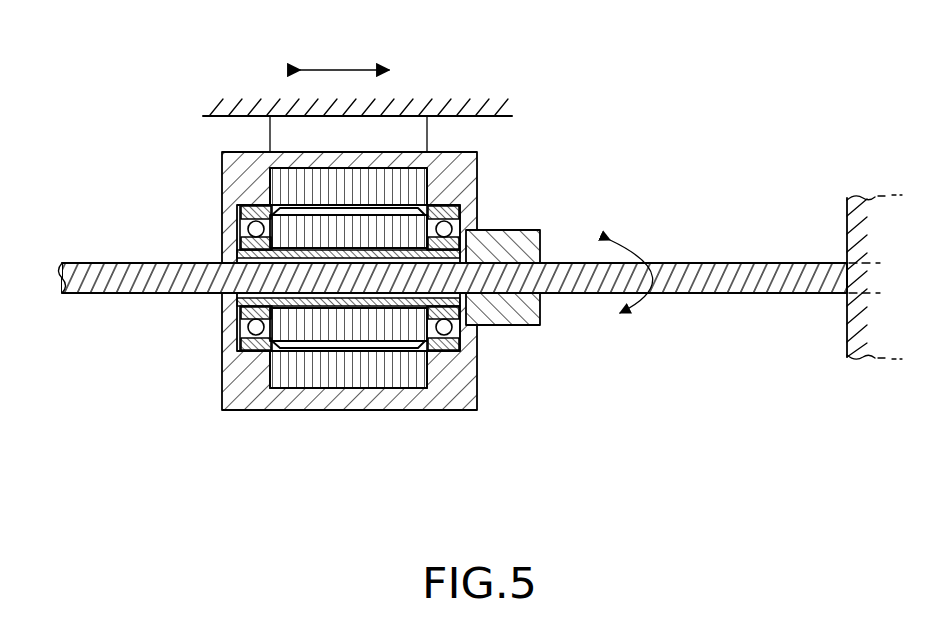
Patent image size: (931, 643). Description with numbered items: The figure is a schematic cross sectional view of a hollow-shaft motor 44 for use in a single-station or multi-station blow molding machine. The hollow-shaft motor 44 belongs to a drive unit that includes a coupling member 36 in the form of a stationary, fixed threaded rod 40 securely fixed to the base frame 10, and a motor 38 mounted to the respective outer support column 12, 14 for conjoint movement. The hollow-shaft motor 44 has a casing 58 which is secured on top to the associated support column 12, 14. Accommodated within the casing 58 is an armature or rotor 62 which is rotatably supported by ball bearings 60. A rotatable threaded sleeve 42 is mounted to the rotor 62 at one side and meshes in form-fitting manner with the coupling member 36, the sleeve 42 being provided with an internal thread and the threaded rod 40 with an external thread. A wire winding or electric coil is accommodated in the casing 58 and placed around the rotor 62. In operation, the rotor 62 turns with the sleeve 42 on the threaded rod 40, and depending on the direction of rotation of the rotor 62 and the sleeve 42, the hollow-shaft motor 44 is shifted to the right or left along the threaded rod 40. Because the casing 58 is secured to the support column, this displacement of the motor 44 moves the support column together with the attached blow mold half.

The base frame 10 is at (875, 228).
The outer support column 12 is at (357, 97).
The outer support column 14 is at (378, 100).
The coupling member 36 is at (453, 315).
The motor 38 is at (268, 301).
The threaded rod 40 is at (722, 275).
The threaded sleeve 42 is at (515, 243).
The hollow-shaft motor 44 is at (268, 301).
The casing 58 is at (243, 392).
The ball bearings 60 is at (223, 358).
The rotor 62 is at (358, 329).